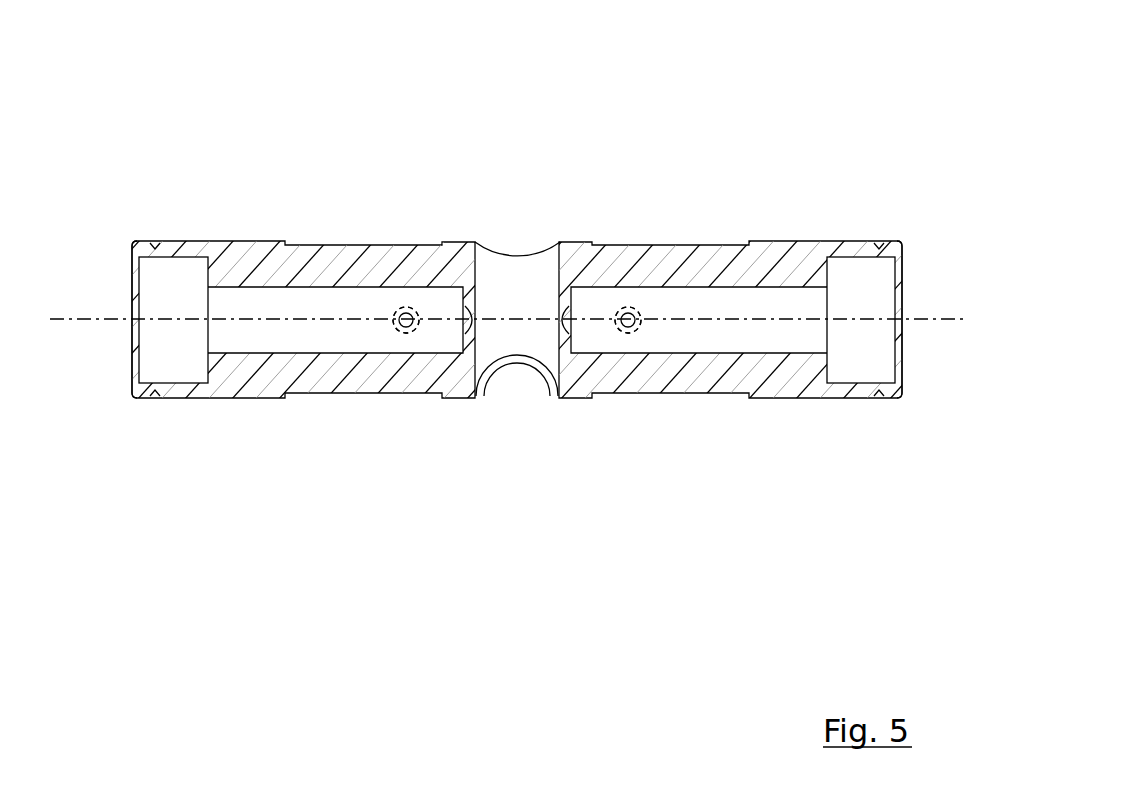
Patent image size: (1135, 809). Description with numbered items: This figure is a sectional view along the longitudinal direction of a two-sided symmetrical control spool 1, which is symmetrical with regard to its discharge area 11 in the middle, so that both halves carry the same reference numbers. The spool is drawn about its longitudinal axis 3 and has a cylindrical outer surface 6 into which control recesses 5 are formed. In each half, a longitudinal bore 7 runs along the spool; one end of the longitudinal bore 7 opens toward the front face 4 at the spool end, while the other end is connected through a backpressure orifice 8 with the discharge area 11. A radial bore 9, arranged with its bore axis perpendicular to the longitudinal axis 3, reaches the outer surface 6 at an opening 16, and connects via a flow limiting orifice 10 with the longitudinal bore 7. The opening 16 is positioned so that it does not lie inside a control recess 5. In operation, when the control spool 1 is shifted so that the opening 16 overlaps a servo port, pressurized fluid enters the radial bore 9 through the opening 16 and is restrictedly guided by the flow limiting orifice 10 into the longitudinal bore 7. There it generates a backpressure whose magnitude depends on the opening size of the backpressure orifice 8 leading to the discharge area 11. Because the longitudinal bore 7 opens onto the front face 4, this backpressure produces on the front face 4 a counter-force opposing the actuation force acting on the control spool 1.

The control spool 1 is at (742, 130).
The longitudinal axis 3 is at (112, 318).
The front face 4 is at (132, 250).
The control recess 5 is at (367, 247).
The outer surface 6 is at (220, 240).
The longitudinal bore 7 is at (325, 318).
The backpressure orifice 8 is at (563, 327).
The radial bore 9 is at (413, 310).
The flow limiting orifice 10 is at (399, 326).
The discharge area 11 is at (533, 304).
The opening 16 is at (404, 333).